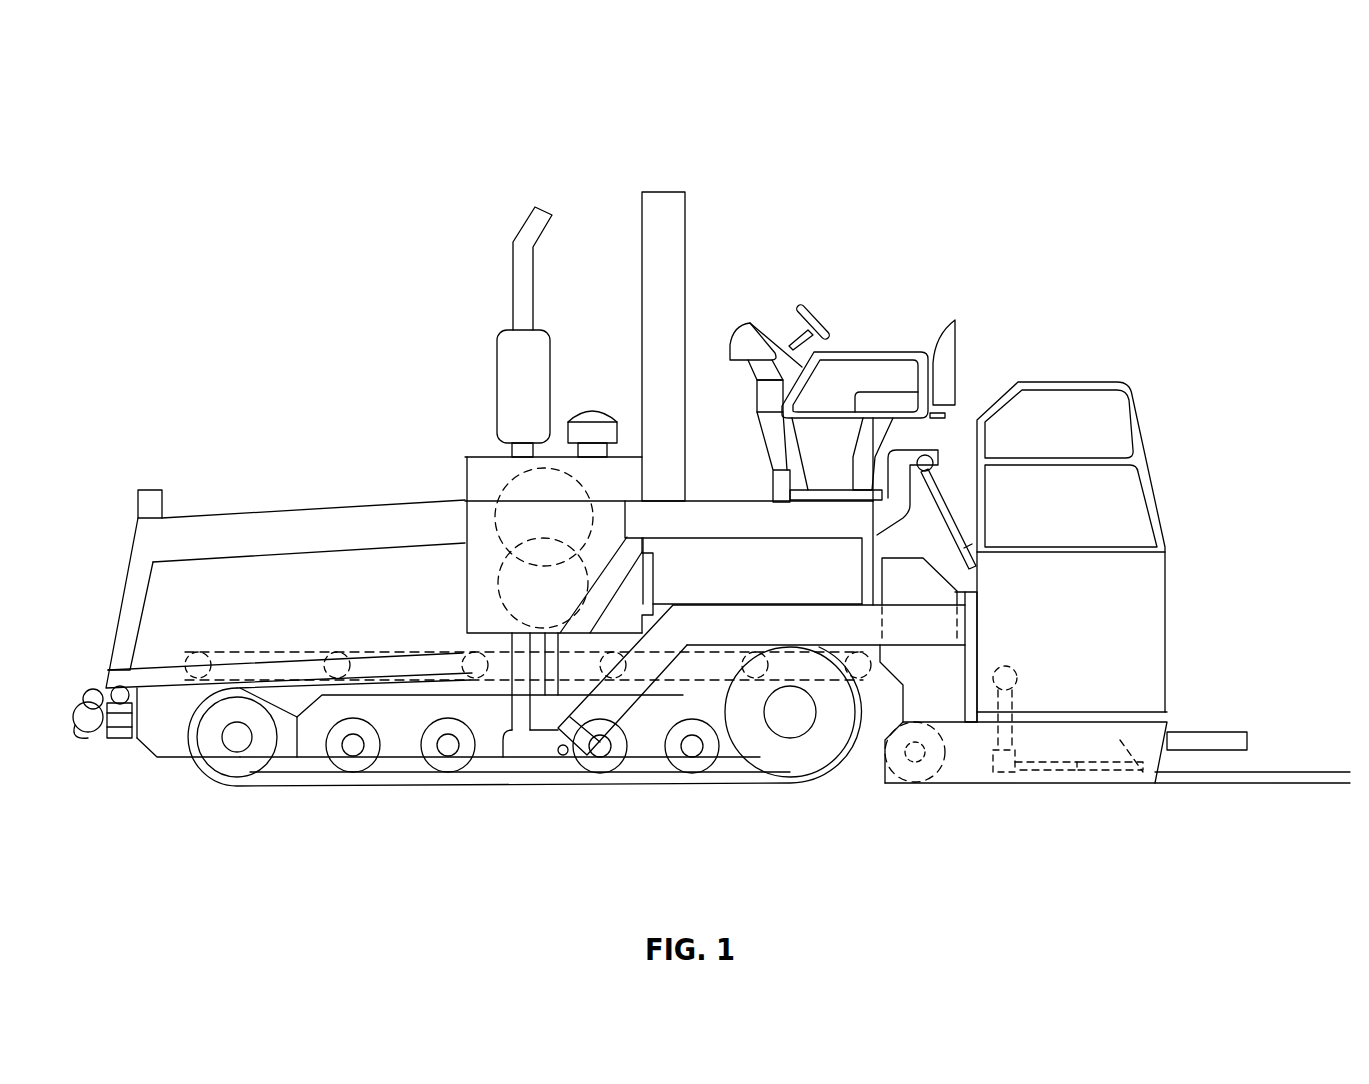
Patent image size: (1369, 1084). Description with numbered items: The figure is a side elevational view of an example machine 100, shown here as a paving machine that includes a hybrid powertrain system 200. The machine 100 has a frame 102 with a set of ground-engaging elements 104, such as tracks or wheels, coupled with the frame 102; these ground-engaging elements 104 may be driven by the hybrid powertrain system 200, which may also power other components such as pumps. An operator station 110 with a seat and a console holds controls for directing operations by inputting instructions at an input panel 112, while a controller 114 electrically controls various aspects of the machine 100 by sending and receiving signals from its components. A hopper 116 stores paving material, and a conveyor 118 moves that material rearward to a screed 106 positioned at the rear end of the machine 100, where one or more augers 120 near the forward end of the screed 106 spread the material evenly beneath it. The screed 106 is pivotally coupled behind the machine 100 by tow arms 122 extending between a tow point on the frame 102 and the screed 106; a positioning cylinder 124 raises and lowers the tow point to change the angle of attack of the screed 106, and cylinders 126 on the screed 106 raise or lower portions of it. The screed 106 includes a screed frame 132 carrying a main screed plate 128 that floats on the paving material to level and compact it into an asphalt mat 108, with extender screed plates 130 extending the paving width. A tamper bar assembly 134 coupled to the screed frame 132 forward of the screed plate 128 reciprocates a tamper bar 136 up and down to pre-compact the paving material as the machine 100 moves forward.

The machine 100 is at (200, 65).
The frame 102 is at (712, 500).
The ground-engaging elements 104 is at (570, 785).
The screed 106 is at (1142, 393).
The asphalt mat 108 is at (1237, 787).
The operator station 110 is at (908, 290).
The input panel 112 is at (760, 327).
The controller 114 is at (785, 505).
The hopper 116 is at (255, 520).
The conveyor 118 is at (688, 660).
The auger 120 is at (893, 787).
The tow arm 122 is at (625, 697).
The positioning cylinder 124 is at (522, 718).
The cylinder 126 is at (942, 497).
The main screed plate 128 is at (1058, 777).
The extender screed plate 130 is at (1093, 775).
The screed frame 132 is at (1147, 782).
The tamper bar assembly 134 is at (1025, 658).
The tamper bar 136 is at (1003, 772).
The hybrid powertrain system 200 is at (500, 470).